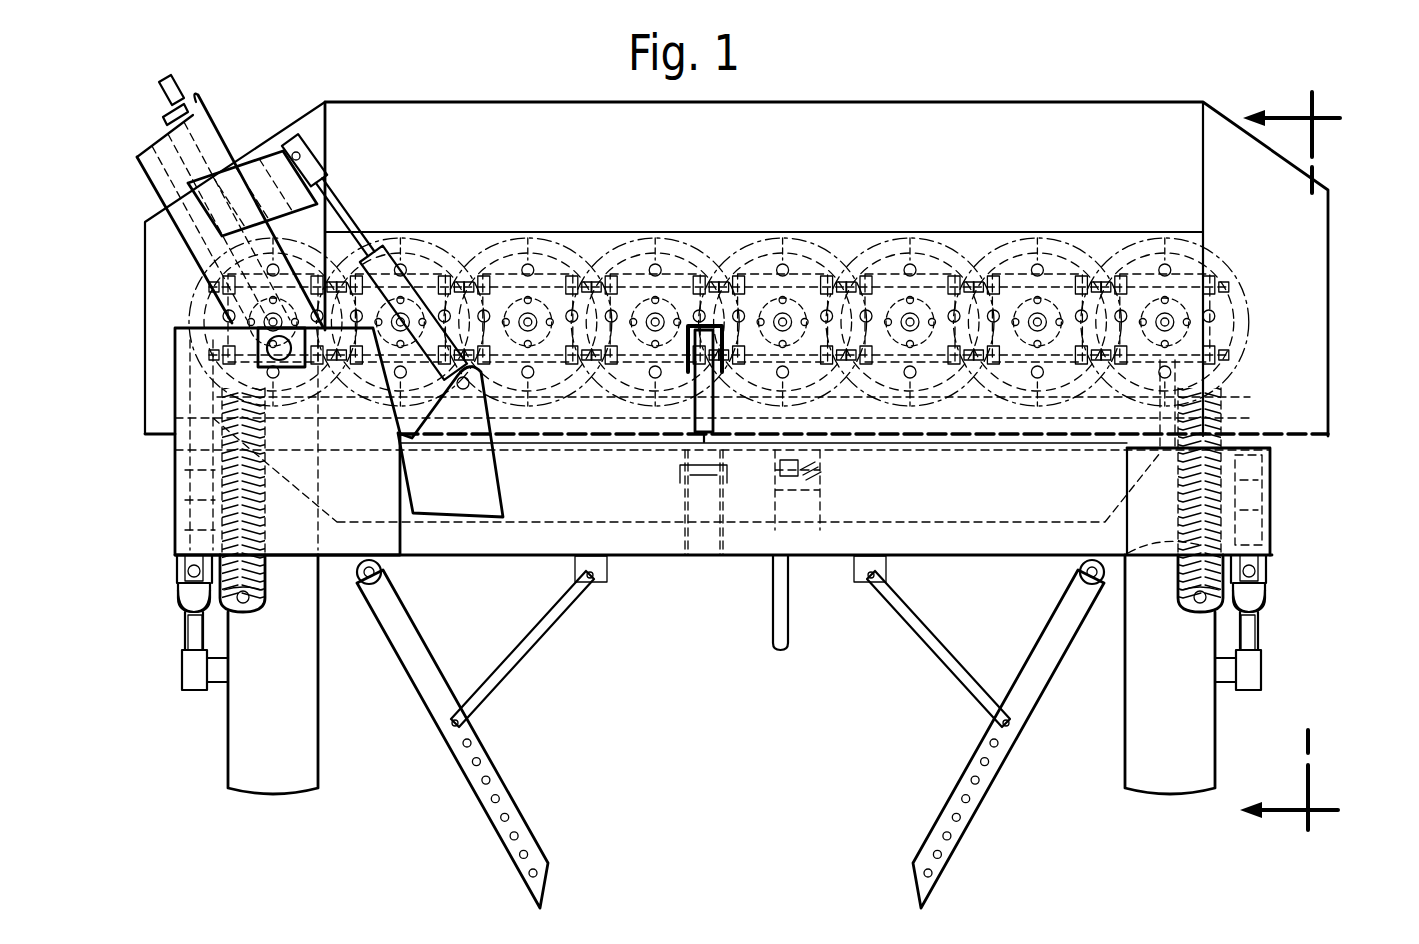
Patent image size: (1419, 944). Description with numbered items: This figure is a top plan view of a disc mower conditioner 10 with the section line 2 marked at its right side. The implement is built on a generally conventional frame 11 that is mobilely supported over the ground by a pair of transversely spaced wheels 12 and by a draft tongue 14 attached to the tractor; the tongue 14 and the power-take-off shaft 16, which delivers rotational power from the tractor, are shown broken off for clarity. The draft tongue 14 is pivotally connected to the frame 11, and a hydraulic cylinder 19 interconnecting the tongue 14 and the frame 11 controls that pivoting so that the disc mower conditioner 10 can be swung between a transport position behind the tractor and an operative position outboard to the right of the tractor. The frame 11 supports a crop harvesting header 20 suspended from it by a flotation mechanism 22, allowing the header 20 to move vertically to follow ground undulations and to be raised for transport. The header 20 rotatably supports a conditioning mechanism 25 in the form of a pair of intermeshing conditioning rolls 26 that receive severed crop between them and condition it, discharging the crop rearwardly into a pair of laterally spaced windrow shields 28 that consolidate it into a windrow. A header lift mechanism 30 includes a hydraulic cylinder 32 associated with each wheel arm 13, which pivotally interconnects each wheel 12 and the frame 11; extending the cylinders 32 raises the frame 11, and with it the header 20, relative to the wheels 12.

The disc mower conditioner 10 is at (372, 78).
The frame 11 is at (1273, 533).
The wheels 12 is at (263, 790).
The wheel arm 13 is at (178, 685).
The draft tongue 14 is at (157, 187).
The power-take-off shaft 16 is at (200, 98).
The hydraulic cylinder 19 is at (345, 213).
The crop harvesting header 20 is at (1075, 90).
The flotation mechanism 22 is at (268, 583).
The conditioning mechanism 25 is at (1258, 390).
The conditioning rolls 26 is at (977, 465).
The windrow shields 28 is at (503, 843).
The header lift mechanism 30 is at (150, 583).
The hydraulic cylinder 32 is at (188, 605).
The section line 2- 2 is at (1320, 461).